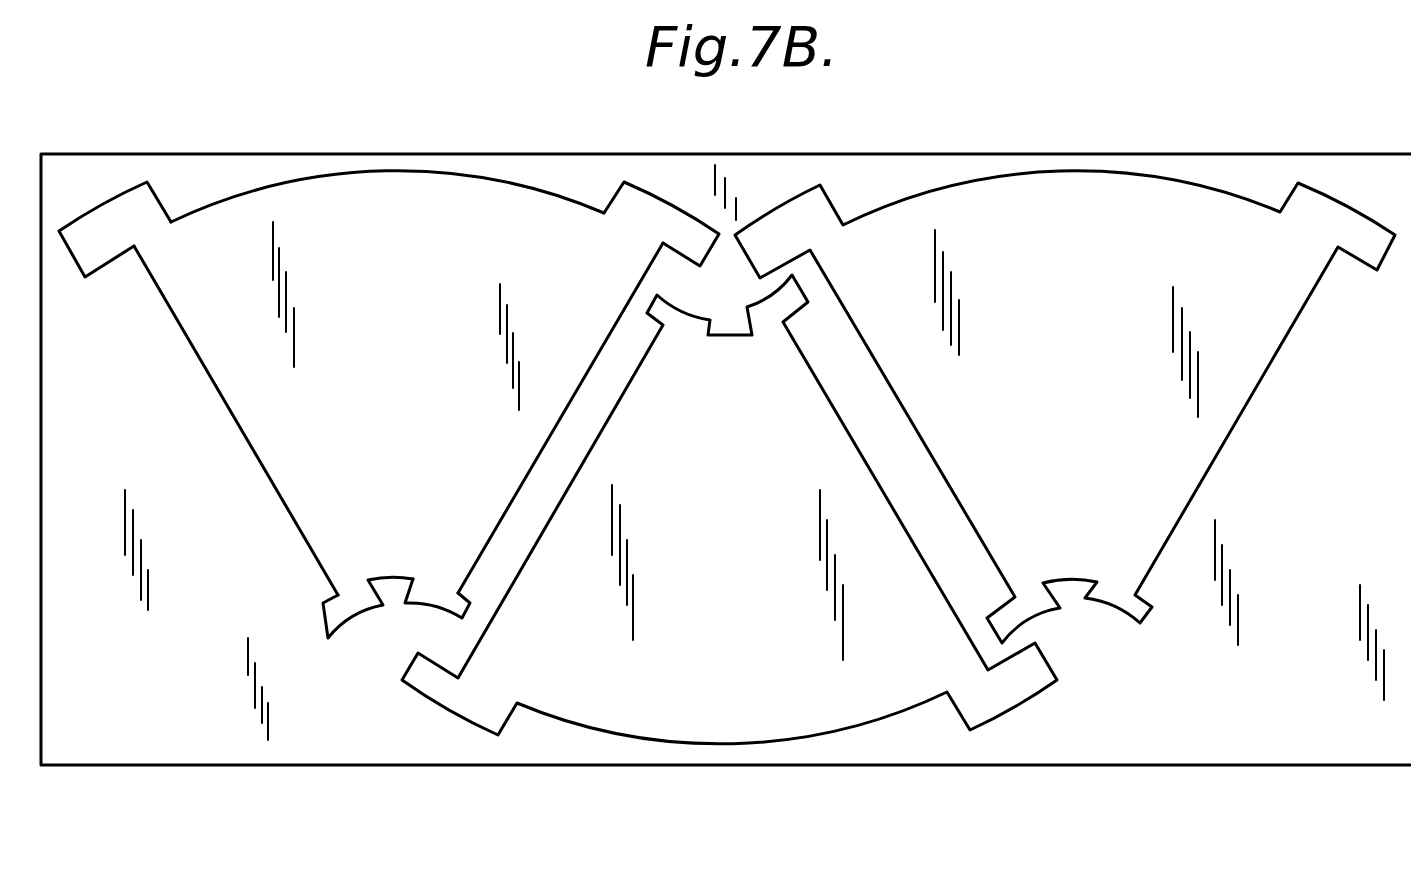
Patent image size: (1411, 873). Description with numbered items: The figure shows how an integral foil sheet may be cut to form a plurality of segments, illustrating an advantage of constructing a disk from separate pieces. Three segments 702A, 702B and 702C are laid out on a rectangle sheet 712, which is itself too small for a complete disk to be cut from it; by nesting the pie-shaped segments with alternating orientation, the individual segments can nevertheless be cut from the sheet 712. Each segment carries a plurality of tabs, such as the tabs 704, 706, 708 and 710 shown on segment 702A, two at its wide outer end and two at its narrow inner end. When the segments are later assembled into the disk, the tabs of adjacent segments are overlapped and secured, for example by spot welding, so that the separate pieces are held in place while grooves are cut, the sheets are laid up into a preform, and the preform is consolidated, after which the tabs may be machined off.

The segment 702A is at (389, 450).
The segment 702B is at (748, 549).
The segment 702C is at (1110, 314).
The tab 704 is at (105, 245).
The tab 706 is at (622, 200).
The tab 708 is at (327, 613).
The tab 710 is at (462, 614).
The rectangle sheet 712 is at (235, 757).